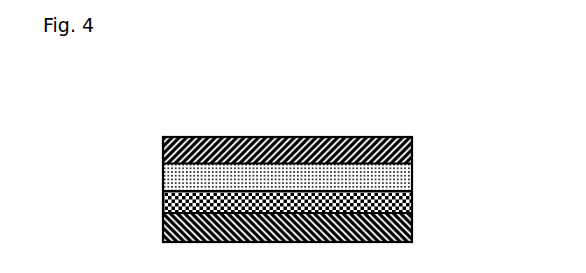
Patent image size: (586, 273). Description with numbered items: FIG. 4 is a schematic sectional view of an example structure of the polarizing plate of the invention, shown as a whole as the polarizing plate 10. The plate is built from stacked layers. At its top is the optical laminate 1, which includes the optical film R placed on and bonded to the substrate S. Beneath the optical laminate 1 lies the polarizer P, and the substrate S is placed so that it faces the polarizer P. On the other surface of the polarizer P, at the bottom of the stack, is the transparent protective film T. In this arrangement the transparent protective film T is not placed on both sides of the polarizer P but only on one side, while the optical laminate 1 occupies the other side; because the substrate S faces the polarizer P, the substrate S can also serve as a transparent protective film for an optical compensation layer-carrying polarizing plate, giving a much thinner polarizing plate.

The laminate / pressure-sensitive adhesive sheet 10 is at (335, 146).
The optical laminate 1 is at (335, 164).
The optical film R is at (412, 153).
The substrate S is at (397, 179).
The polarizer P is at (412, 202).
The transparent protective film T is at (397, 230).